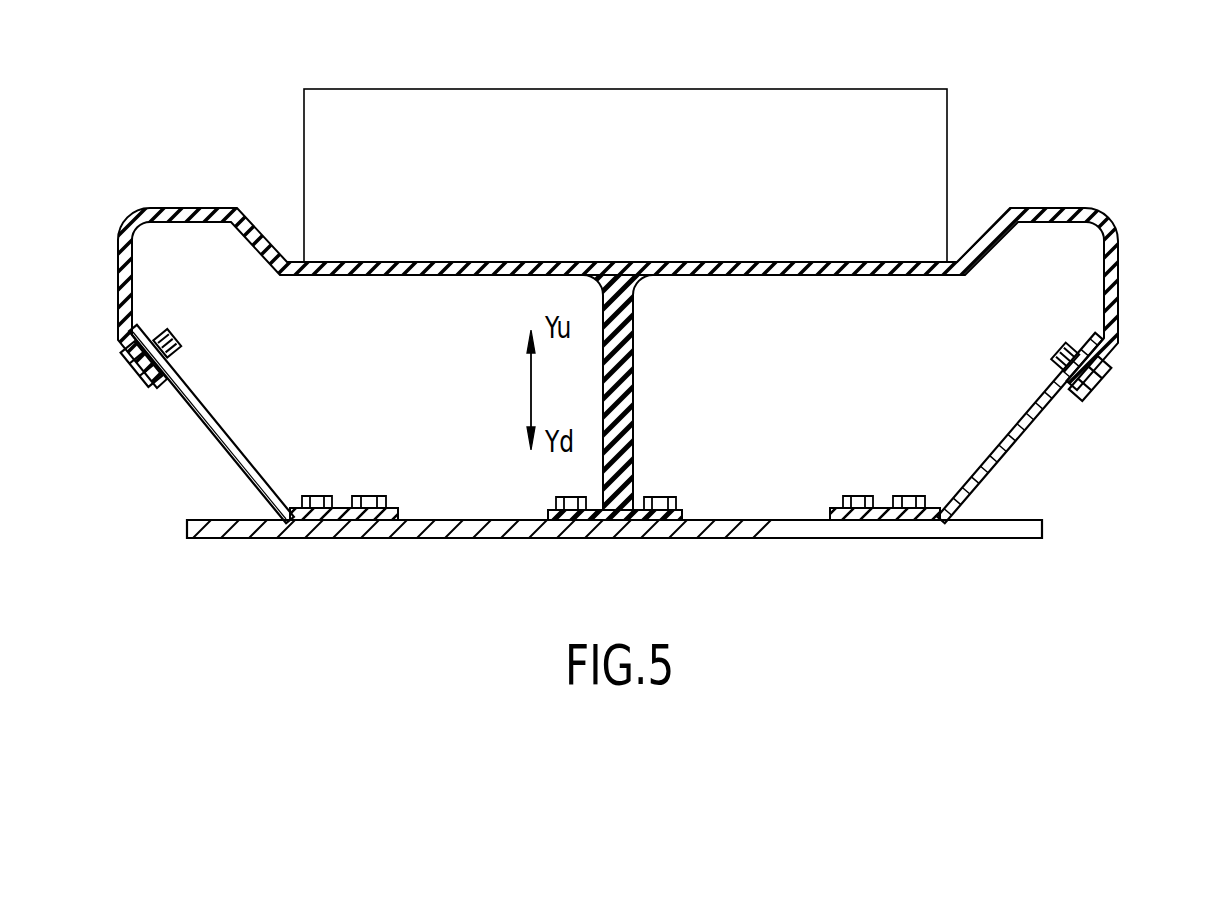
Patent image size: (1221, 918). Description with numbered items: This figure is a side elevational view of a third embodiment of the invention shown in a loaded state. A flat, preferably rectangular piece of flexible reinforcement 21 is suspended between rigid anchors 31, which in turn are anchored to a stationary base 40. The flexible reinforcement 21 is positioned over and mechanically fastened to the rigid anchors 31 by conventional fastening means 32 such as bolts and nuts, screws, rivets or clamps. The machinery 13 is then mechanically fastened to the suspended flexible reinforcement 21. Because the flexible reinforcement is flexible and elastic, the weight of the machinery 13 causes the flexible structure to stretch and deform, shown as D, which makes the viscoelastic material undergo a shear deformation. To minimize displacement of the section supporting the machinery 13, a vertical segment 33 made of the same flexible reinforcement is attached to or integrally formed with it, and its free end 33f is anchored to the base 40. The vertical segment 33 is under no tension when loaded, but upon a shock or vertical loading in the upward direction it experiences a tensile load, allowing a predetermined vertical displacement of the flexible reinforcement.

The machinery 13 is at (635, 107).
The flexible reinforcement 21 is at (1022, 211).
The deformation D is at (270, 232).
The rigid anchors 31 is at (240, 438).
The fastening means 32 is at (130, 385).
The vertical segment 33 is at (630, 373).
The free end 33f is at (680, 495).
The stationary base 40 is at (1012, 522).